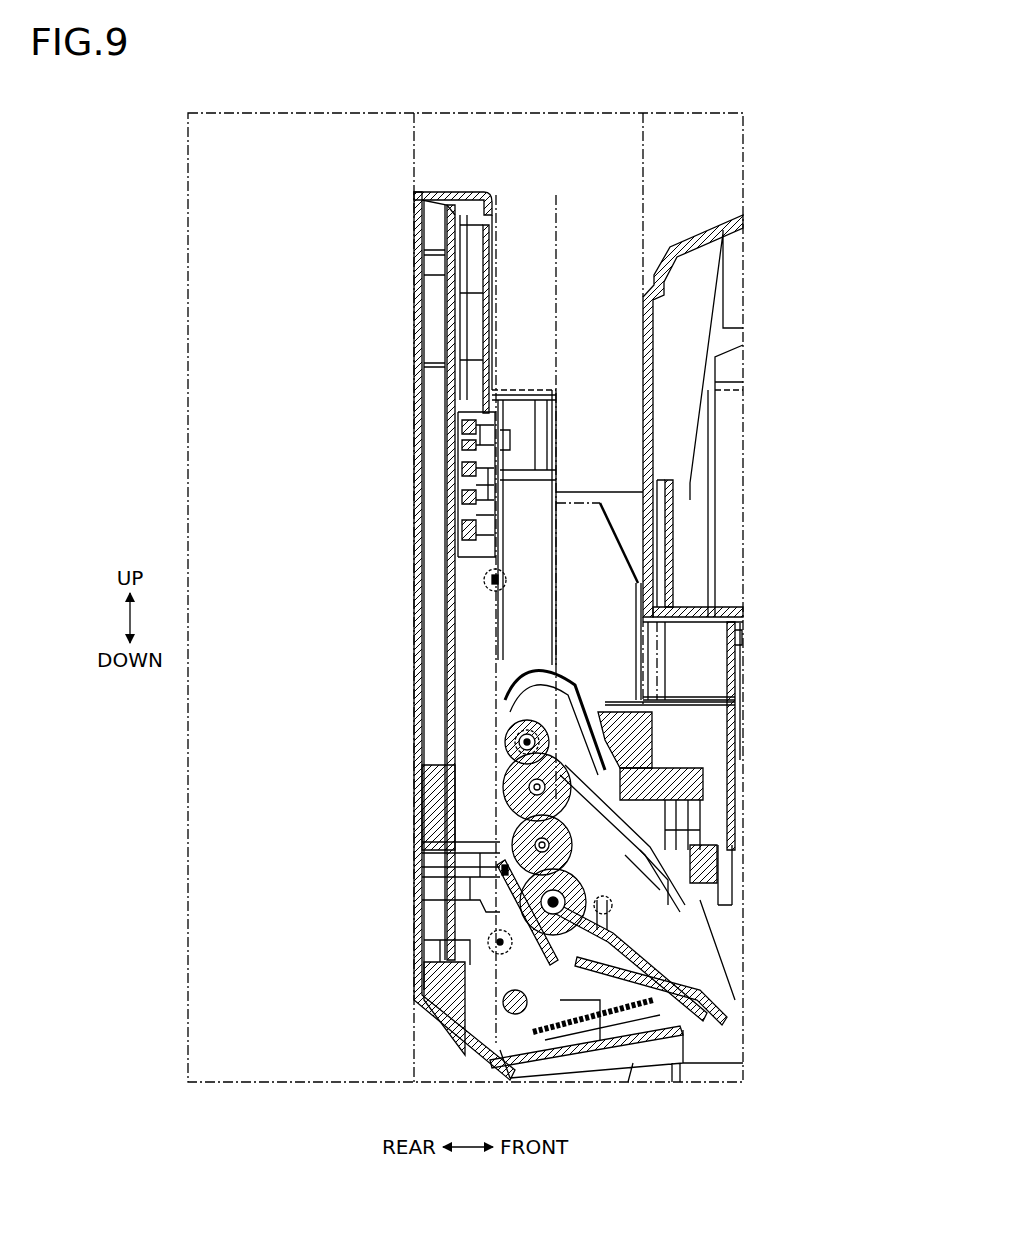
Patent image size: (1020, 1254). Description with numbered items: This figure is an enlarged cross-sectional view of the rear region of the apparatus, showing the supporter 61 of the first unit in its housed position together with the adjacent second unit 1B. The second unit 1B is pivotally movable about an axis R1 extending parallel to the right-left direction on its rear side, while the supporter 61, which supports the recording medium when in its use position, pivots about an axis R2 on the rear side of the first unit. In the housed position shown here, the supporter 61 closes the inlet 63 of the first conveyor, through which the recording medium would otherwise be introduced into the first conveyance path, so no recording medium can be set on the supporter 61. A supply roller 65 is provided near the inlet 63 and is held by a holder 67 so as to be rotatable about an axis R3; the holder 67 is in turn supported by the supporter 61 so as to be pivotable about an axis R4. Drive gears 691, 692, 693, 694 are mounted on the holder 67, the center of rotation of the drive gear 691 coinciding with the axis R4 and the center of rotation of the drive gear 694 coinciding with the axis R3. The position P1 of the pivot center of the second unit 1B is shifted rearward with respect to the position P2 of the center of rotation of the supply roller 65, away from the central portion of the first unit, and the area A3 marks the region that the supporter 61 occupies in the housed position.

The second unit 1B is at (615, 503).
The supporter 61 is at (416, 640).
The inlet 63 is at (505, 870).
The supply roller 65 is at (600, 958).
The holder 67 is at (558, 903).
The drive gear 691 is at (549, 742).
The drive gear 692 is at (571, 787).
The drive gear 693 is at (572, 845).
The drive gear 694 is at (586, 902).
The axis R1 is at (485, 578).
The axis R2 is at (492, 950).
The axis R3 is at (612, 908).
The axis R4 is at (537, 735).
The area A3 is at (643, 140).
The position P1 is at (499, 603).
The position P2 is at (556, 482).